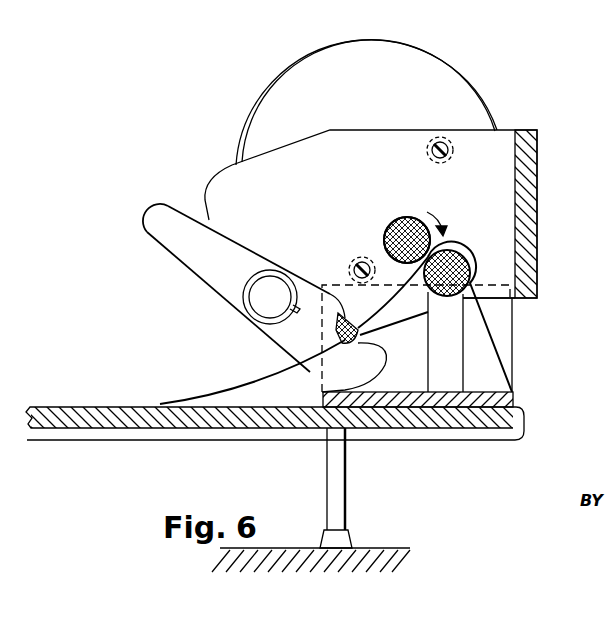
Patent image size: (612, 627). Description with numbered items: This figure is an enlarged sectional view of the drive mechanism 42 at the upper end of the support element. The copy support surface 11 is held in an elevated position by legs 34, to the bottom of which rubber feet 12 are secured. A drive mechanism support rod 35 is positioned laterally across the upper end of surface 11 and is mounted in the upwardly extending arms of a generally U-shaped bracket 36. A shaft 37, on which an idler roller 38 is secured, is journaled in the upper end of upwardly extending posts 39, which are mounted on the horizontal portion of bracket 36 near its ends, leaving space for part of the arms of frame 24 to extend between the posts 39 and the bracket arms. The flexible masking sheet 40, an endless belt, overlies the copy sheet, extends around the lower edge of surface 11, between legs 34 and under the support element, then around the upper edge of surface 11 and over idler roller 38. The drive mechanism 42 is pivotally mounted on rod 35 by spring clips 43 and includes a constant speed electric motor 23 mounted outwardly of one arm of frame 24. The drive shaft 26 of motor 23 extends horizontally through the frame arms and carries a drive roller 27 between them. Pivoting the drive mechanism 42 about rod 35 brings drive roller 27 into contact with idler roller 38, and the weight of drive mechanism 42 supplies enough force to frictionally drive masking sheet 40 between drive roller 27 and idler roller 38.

The copy support surface 11 is at (150, 420).
The rubber feet 12 is at (323, 545).
The constant speed electric motor 23 is at (463, 76).
The frame 24 is at (538, 190).
The drive shaft 26 is at (390, 226).
The drive roller 27 is at (405, 217).
The legs 34 is at (328, 470).
The drive mechanism support rod 35 is at (338, 330).
The U-shaped bracket 36 is at (513, 320).
The shaft 37 is at (472, 270).
The idler roller 38 is at (468, 252).
The posts 39 is at (448, 350).
The flexible masking sheet 40 is at (215, 395).
The drive mechanism 42 is at (530, 104).
The spring clips 43 is at (210, 288).